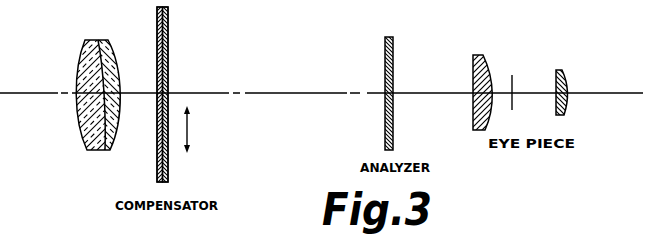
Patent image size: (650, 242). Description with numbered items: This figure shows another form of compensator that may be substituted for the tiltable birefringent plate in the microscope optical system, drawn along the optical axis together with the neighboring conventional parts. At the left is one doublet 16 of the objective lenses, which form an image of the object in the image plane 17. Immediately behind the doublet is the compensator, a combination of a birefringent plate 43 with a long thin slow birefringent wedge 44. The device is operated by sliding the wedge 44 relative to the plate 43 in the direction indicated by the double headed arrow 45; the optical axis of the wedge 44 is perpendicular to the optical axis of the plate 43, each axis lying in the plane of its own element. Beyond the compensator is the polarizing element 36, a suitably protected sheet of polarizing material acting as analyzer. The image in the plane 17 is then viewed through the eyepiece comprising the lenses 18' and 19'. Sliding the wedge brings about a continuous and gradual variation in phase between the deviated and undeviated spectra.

The doublet 16 is at (90, 40).
The long thin slow birefringent wedge 44 is at (168, 62).
The birefringent plate 43 is at (157, 113).
The double headed arrow 45 is at (187, 129).
The polarizing element 36 is at (393, 41).
The eyepiece lens 18' is at (477, 75).
The image plane 17 is at (512, 76).
The eyepiece lens 19' is at (568, 77).